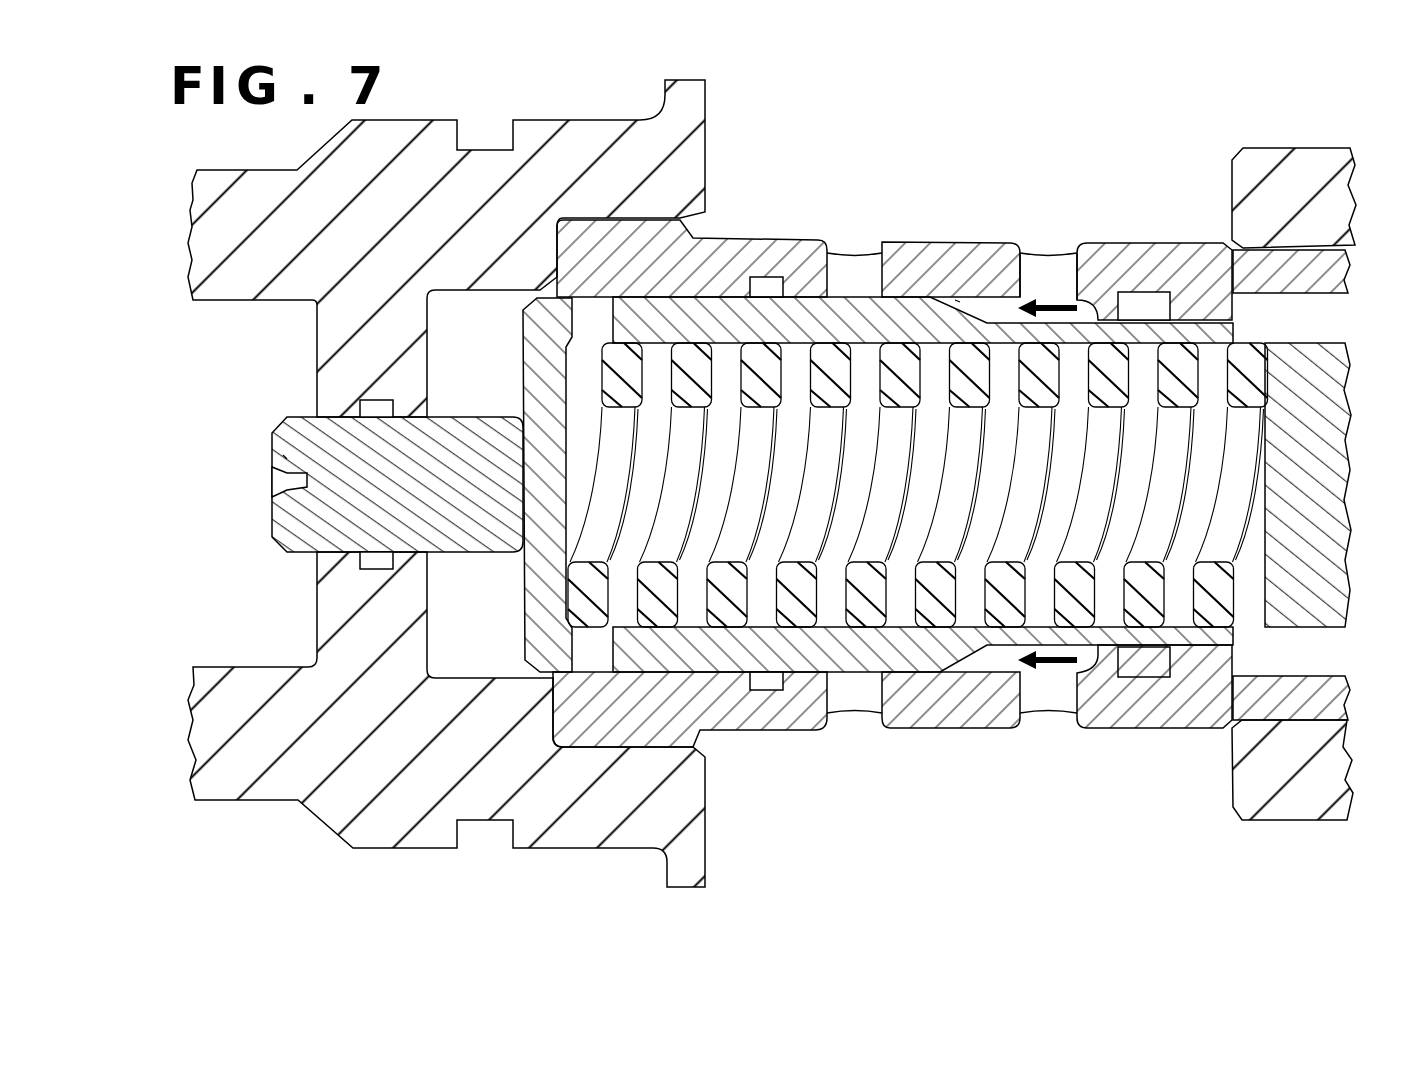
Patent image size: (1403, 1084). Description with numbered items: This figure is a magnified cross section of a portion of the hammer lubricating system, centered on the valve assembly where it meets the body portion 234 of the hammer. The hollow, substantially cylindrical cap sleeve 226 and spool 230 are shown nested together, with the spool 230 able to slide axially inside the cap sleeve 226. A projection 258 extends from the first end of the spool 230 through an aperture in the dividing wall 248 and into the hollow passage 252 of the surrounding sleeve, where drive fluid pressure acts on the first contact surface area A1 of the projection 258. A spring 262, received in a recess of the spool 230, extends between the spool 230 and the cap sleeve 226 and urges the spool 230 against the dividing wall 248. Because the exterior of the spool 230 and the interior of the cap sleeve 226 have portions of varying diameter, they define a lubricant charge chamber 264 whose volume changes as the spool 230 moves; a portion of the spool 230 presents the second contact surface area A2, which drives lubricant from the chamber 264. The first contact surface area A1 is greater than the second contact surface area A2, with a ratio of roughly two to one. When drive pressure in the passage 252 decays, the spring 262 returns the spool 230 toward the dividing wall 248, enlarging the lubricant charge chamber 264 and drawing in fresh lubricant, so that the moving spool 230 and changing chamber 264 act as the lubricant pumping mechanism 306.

The hollow passage 252 is at (268, 400).
The dividing wall 248 is at (340, 587).
The body portion 234 is at (672, 797).
The projection 258 is at (337, 477).
The lubricant charge chamber 264 is at (978, 310).
The cap sleeve 226 is at (973, 703).
The spool 230 is at (860, 648).
The lubricant pumping mechanism 306 is at (1084, 228).
The spring 262 is at (572, 600).
The first contact surface area A1 is at (285, 457).
The second contact surface area A2 is at (957, 300).